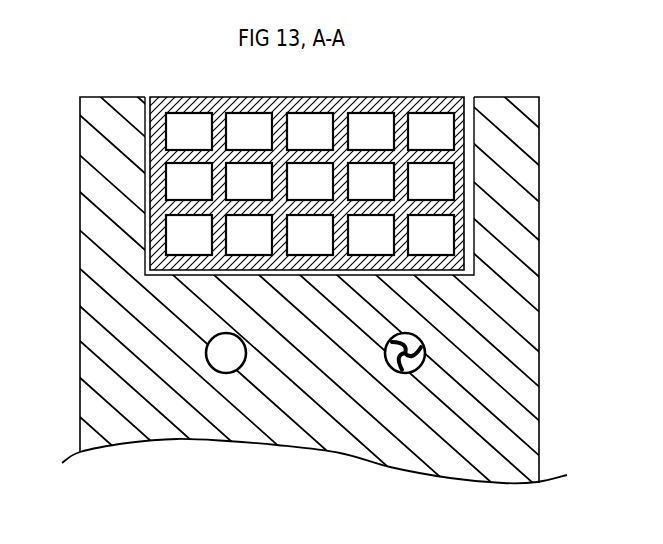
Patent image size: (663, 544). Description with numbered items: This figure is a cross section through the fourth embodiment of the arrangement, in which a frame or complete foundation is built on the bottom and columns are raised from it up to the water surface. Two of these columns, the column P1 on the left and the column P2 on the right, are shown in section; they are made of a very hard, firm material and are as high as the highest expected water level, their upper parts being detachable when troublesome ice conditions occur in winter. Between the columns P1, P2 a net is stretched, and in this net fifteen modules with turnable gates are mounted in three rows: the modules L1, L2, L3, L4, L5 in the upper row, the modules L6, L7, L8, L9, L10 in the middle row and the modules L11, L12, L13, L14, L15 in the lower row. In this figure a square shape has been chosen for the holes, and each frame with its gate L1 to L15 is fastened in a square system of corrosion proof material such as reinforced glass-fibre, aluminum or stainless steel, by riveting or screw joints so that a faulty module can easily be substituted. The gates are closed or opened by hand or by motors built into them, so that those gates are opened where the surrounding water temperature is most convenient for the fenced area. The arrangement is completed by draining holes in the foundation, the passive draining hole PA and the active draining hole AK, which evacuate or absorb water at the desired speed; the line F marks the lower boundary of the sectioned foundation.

The module with turnable gate L1 is at (189, 131).
The module with turnable gate L2 is at (249, 131).
The module with turnable gate L3 is at (310, 131).
The module with turnable gate L4 is at (371, 131).
The module with turnable gate L5 is at (431, 131).
The module with turnable gate L6 is at (189, 181).
The module with turnable gate L7 is at (249, 181).
The module with turnable gate L8 is at (310, 181).
The module with turnable gate L9 is at (371, 181).
The module with turnable gate L10 is at (431, 181).
The module with turnable gate L11 is at (189, 235).
The module with turnable gate L12 is at (249, 235).
The module with turnable gate L13 is at (310, 235).
The module with turnable gate L14 is at (371, 235).
The module with turnable gate L15 is at (431, 235).
The column P1 is at (80, 108).
The column P2 is at (539, 112).
The passive draining hole PA is at (227, 374).
The active draining hole AK is at (406, 374).
The fracture/boundary surface F is at (539, 415).